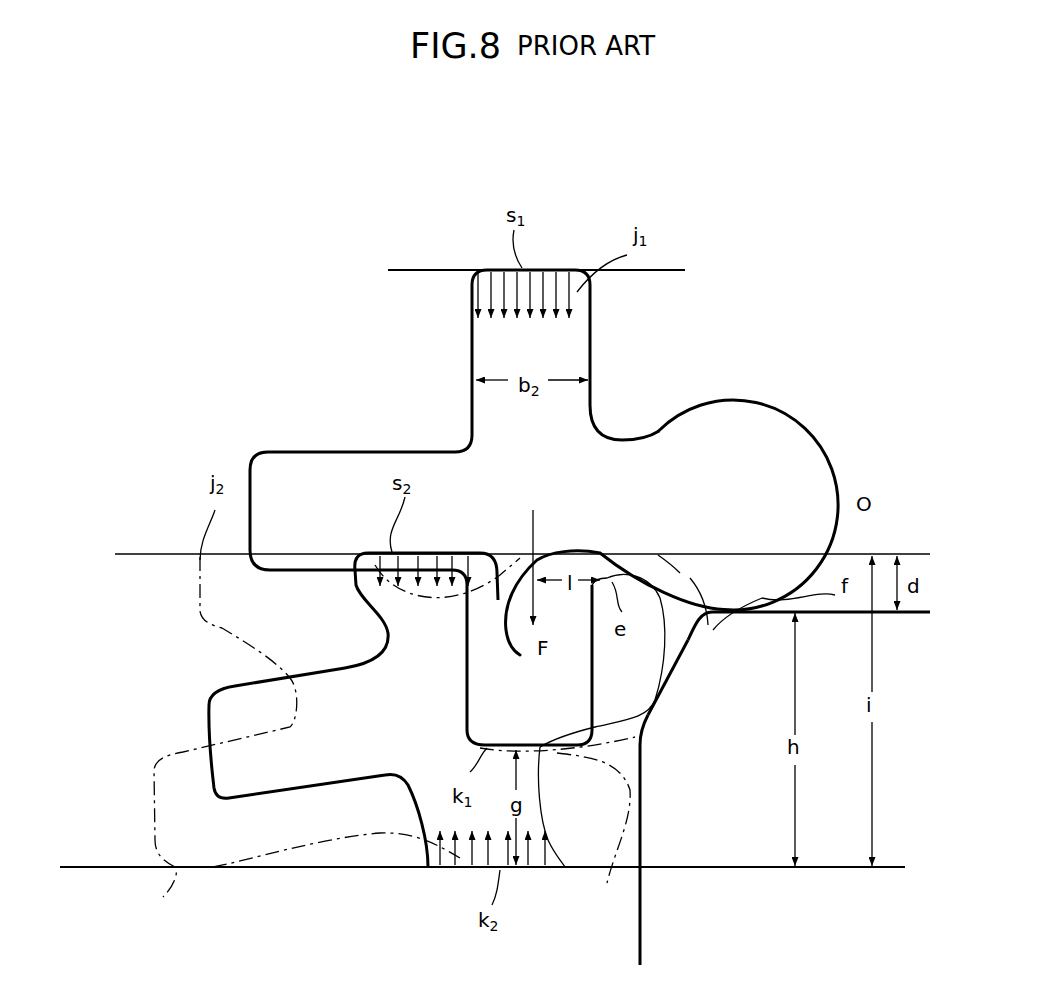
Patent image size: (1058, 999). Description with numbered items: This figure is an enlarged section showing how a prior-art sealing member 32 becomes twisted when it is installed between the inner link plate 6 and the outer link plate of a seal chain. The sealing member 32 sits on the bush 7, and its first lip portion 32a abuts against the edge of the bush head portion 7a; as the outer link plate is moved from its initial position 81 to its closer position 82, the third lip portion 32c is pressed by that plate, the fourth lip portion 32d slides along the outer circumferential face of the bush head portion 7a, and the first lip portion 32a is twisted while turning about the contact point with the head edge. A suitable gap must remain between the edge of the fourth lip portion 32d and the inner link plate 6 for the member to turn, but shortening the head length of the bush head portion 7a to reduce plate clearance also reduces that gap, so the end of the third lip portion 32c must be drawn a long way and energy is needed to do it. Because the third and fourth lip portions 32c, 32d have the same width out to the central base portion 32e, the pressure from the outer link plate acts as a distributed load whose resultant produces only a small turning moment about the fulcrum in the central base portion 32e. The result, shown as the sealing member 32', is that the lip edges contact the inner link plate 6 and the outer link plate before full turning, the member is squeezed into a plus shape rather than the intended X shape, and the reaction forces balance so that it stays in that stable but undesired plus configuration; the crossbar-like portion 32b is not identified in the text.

The sealing member 32 is at (503, 593).
The sealing member 32' is at (353, 710).
The first lip portion 32a is at (808, 490).
The tooth crossbar portion 32b is at (280, 467).
The third lip portion 32c is at (570, 352).
The fourth lip portion 32d is at (482, 690).
The central base portion 32e is at (583, 460).
The outer link plate position 81 is at (422, 272).
The outer link plate position 82 is at (143, 557).
The inner link plate 6 is at (115, 866).
The bush 7 is at (746, 788).
The bush head portion 7a is at (648, 820).